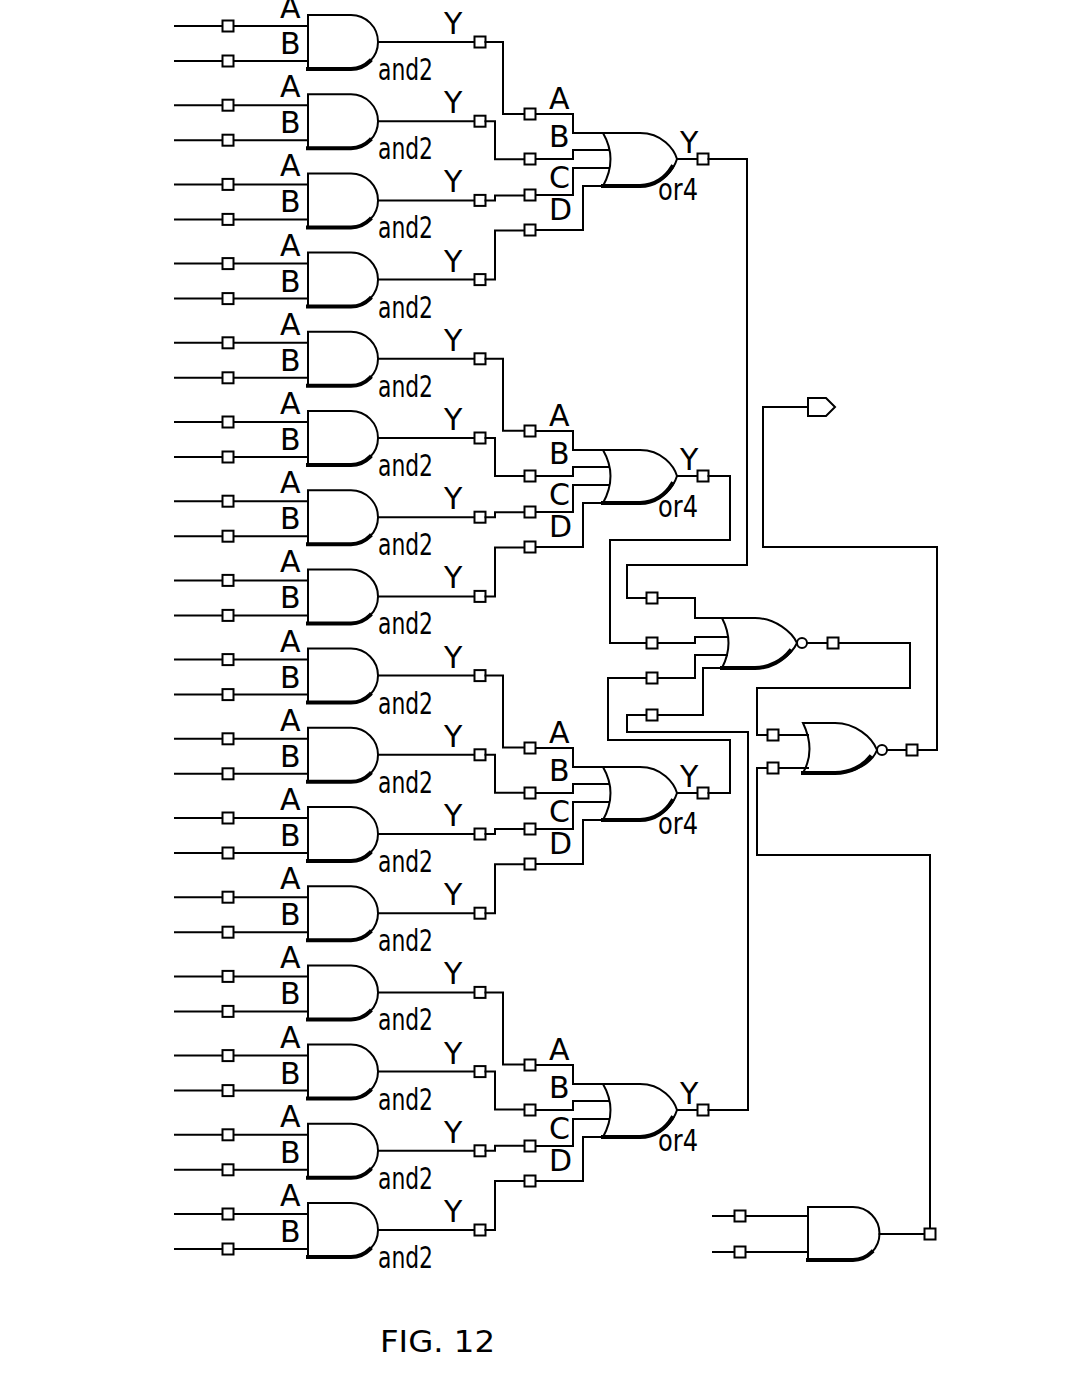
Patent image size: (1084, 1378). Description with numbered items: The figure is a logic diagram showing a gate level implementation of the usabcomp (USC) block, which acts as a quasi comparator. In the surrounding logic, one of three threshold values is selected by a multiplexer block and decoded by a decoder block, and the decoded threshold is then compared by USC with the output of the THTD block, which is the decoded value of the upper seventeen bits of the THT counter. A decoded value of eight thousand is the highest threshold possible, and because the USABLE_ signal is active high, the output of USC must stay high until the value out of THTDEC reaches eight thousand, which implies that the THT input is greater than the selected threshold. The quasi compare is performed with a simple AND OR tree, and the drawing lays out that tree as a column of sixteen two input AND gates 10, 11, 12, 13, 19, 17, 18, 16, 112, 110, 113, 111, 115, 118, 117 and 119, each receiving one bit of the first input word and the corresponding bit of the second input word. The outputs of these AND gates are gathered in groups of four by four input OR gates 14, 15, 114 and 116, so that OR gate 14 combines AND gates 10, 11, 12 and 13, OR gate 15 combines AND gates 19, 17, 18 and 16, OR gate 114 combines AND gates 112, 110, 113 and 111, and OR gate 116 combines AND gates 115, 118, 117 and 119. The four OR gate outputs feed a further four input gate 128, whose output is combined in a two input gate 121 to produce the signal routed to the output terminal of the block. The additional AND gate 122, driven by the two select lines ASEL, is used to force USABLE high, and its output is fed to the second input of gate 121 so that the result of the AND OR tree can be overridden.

The AND gate (bit 15) 10 is at (295, 57).
The AND gate (bit 14) 11 is at (295, 117).
The AND gate (bit 13) 12 is at (295, 196).
The AND gate (bit 12) 13 is at (295, 276).
The OR gate (or4) 14 is at (636, 339).
The OR gate (or4) 15 is at (628, 520).
The AND gate (bit 8) 16 is at (295, 592).
The AND gate (bit 10) 17 is at (295, 434).
The AND gate (bit 9) 18 is at (295, 513).
The AND gate (bit 11) 19 is at (295, 369).
The AND gate (bit 6) 110 is at (295, 751).
The AND gate (bit 4) 111 is at (295, 909).
The AND gate (bit 7) 112 is at (295, 686).
The AND gate (bit 5) 113 is at (295, 830).
The OR gate (or4) 114 is at (628, 774).
The AND gate (bit 3) 115 is at (295, 1002).
The OR gate (or4) 116 is at (637, 951).
The AND gate (bit 1) 117 is at (295, 1147).
The AND gate (bit 2) 118 is at (295, 1068).
The AND gate (bit 0) 119 is at (295, 1226).
The NOR gate (nor2) 121 is at (847, 814).
The AND gate 122 is at (764, 1231).
The NOR gate (nor4) 128 is at (779, 648).